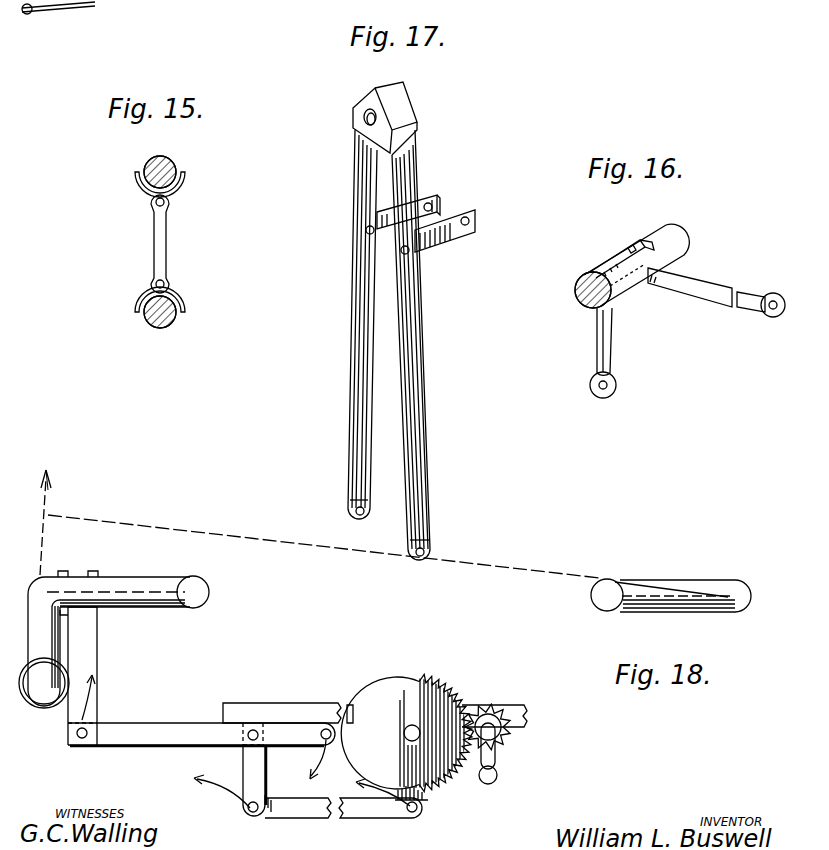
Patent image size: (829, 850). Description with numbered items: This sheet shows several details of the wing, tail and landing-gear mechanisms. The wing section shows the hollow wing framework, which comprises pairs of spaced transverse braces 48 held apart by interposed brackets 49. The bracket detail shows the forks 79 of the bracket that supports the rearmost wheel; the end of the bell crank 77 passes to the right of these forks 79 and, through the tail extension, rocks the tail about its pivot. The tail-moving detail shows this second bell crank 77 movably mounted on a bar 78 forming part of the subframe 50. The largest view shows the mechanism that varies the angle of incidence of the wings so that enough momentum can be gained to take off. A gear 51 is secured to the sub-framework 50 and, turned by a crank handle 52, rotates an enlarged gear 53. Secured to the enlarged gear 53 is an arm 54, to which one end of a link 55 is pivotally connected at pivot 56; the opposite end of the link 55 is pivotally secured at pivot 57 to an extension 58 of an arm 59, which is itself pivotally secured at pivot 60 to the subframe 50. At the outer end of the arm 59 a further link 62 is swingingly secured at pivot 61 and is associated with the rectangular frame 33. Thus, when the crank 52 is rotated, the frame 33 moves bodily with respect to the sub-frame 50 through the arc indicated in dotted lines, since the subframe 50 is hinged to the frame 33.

In FIG. 18, the framework 33 is at (196, 588).
In FIG. 15, the transverse brace 48 is at (174, 160).
In FIG. 15, the bracket 49 is at (160, 232).
In FIG. 18, the sub-framework 50 is at (313, 711).
In FIG. 18, the gear 51 is at (492, 718).
In FIG. 18, the crank handle 52 is at (508, 768).
In FIG. 18, the enlarged gear 53 is at (412, 690).
In FIG. 18, the arm 54 is at (425, 800).
In FIG. 18, the link 55 is at (378, 811).
In FIG. 18, the pivot 56 is at (418, 813).
In FIG. 18, the pivot 57 is at (253, 814).
In FIG. 18, the extension 58 is at (243, 783).
In FIG. 18, the arm 59 is at (170, 738).
In FIG. 18, the pivot 60 is at (258, 730).
In FIG. 18, the pivot 61 is at (100, 724).
In FIG. 18, the link 62 is at (86, 651).
In FIG. 16, the bell crank 77 is at (676, 291).
In FIG. 16, the bar 78 is at (670, 226).
In FIG. 17, the forks 79 is at (412, 331).